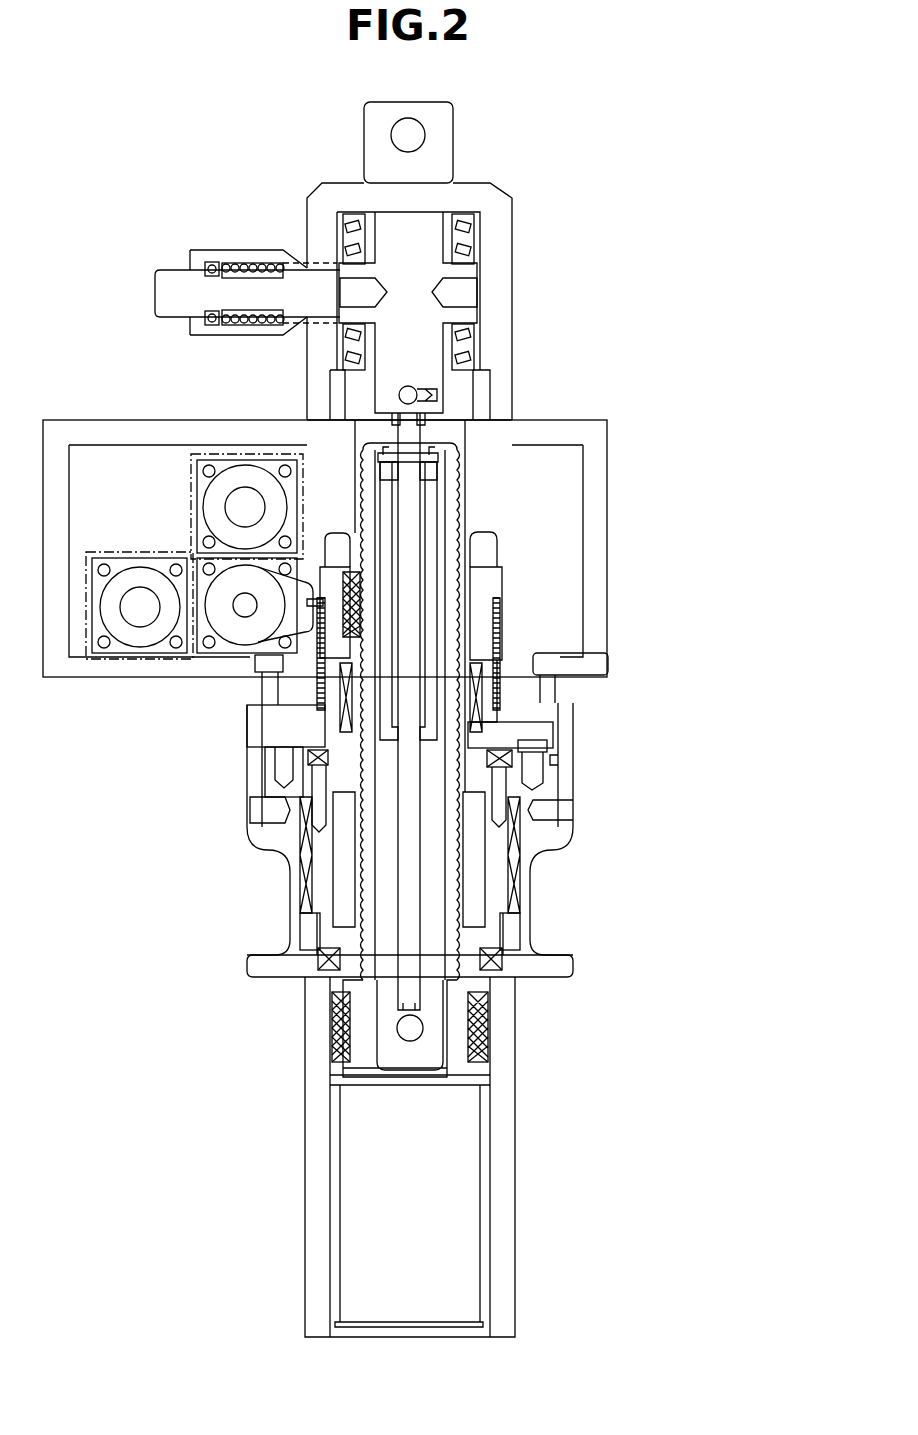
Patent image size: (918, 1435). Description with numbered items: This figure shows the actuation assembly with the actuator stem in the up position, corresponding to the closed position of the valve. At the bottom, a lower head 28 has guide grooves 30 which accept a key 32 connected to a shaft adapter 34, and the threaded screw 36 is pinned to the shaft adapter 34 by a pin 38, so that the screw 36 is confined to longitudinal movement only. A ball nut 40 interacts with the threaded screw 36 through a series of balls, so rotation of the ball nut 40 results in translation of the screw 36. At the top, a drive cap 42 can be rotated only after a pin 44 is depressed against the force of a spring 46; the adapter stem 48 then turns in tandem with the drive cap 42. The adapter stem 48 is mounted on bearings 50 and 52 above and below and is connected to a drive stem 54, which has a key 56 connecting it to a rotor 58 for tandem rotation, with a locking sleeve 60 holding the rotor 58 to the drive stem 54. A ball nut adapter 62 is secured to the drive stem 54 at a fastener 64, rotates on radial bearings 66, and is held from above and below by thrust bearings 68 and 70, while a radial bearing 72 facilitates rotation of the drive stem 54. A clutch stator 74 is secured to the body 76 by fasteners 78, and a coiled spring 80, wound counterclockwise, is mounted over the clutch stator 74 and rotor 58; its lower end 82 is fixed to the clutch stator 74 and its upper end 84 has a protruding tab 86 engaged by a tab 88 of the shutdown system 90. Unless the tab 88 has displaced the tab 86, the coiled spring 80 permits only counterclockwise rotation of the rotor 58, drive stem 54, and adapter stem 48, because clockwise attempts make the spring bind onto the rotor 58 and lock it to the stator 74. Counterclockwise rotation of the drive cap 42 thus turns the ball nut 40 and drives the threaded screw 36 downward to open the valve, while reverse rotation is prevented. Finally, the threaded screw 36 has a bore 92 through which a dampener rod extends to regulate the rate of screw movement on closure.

The lower head 28 is at (307, 1140).
The guide grooves 30 is at (338, 1198).
The key 32 is at (335, 1025).
The shaft adapter 34 is at (467, 985).
The threaded screw 36 is at (370, 868).
The pin 38 is at (415, 1030).
The ball nut 40 is at (357, 853).
The drive cap 42 is at (512, 290).
The pin 44 is at (158, 272).
The spring 46 is at (248, 265).
The adapter stem 48 is at (470, 313).
The bearing 50 is at (475, 235).
The bearing 52 is at (475, 348).
The drive stem 54 is at (462, 500).
The key 56 is at (350, 533).
The rotor 58 is at (497, 585).
The locking sleeve 60 is at (497, 548).
The ball nut adapter 62 is at (500, 897).
The fastener 64 is at (503, 778).
The radial bearings 66 is at (520, 855).
The thrust bearing 68 is at (525, 740).
The thrust bearing 70 is at (500, 955).
The radial bearing 72 is at (333, 710).
The clutch stator 74 is at (335, 683).
The body 76 is at (290, 915).
The fasteners 78 is at (283, 760).
The coiled spring 80 is at (500, 630).
The lower end 82 is at (500, 707).
The upper end 84 is at (500, 607).
The tab 86 is at (318, 630).
The tab 88 is at (267, 622).
The shutdown system 90 is at (160, 515).
The bore 92 is at (435, 543).